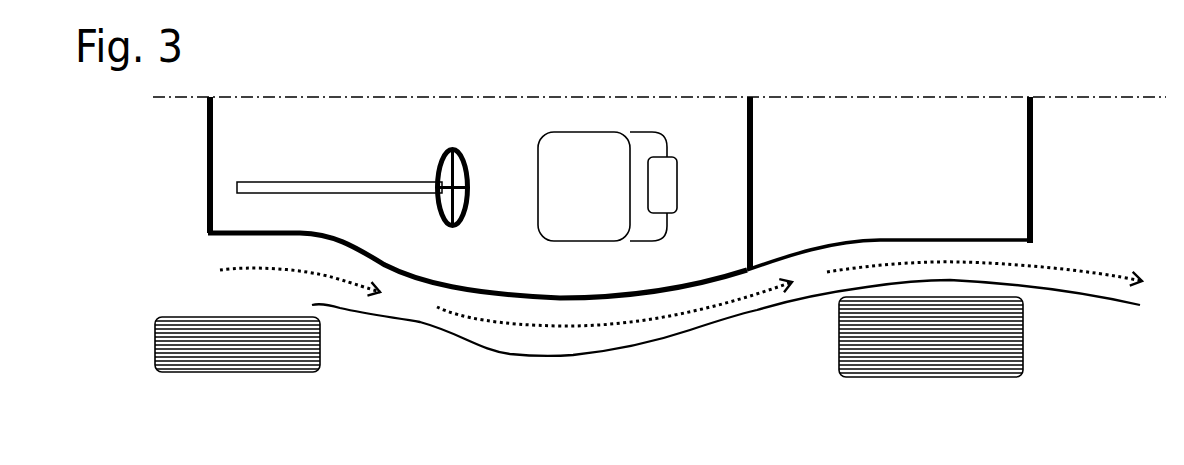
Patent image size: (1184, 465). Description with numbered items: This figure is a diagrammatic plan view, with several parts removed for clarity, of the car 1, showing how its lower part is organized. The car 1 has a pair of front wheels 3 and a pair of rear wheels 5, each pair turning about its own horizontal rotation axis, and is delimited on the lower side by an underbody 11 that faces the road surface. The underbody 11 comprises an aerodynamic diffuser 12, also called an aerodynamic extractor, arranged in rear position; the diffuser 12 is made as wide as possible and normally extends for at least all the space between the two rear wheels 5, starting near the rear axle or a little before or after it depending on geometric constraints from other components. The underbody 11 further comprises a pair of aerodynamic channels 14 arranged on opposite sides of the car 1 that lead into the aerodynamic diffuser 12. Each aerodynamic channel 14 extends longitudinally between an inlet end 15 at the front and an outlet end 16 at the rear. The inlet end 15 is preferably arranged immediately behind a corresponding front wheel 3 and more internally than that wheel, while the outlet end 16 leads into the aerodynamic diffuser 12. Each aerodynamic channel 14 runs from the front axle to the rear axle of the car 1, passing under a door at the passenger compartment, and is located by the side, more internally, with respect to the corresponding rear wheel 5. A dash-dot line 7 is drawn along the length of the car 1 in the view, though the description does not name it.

The car 1 is at (1100, 400).
The front wheels 3 is at (240, 347).
The rear wheels 5 is at (940, 348).
The vehicle longitudinal axis 7 is at (500, 90).
The underbody 11 is at (724, 372).
The aerodynamic diffuser 12 is at (1104, 172).
The aerodynamic channels 14 is at (421, 312).
The inlet end 15 is at (298, 291).
The outlet end 16 is at (1054, 281).